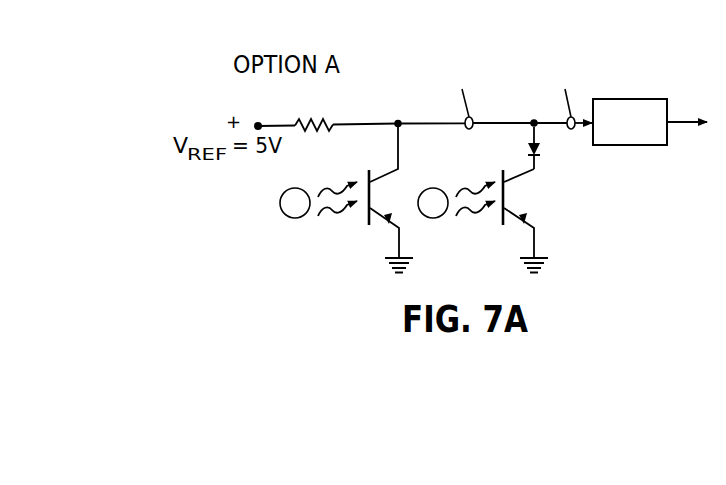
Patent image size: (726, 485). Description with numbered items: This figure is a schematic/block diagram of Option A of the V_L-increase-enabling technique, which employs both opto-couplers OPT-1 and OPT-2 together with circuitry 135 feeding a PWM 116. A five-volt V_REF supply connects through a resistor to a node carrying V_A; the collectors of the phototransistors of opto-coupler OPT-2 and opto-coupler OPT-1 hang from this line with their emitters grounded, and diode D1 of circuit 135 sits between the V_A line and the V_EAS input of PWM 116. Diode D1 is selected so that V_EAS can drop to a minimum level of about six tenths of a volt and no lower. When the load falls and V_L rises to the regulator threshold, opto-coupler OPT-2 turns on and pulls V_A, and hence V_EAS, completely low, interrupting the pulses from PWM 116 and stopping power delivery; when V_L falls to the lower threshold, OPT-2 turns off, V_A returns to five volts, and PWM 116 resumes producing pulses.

The PWM 116 is at (632, 99).
The circuitry 135 is at (612, 194).
The diode D1 is at (550, 148).
The opto-coupler OPT-1 is at (483, 208).
The opto-coupler OPT-2 is at (346, 200).